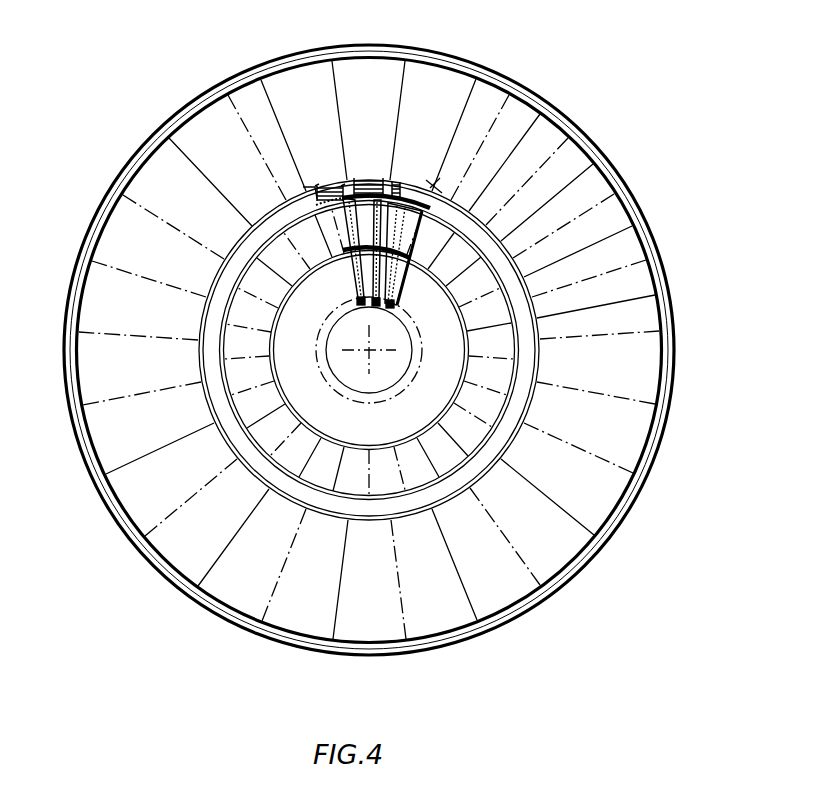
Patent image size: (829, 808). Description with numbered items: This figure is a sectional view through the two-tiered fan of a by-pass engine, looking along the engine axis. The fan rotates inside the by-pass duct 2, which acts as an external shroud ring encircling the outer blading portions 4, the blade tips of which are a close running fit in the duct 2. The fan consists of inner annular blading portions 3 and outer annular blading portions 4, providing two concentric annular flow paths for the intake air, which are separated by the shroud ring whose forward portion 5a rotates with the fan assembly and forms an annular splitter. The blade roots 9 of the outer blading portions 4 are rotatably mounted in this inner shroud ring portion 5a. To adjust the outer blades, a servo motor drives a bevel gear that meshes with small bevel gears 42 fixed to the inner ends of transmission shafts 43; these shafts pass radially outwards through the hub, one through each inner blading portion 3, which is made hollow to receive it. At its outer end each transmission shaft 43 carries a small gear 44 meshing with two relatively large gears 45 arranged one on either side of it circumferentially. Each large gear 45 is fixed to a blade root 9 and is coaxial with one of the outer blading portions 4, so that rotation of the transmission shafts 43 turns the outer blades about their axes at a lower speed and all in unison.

The by-pass duct 2 is at (338, 52).
The inner annular blading portion 3 is at (423, 238).
The outer annular blading portion 4 is at (290, 68).
The forward portion of shroud ring 5a is at (517, 270).
The blade root 9 is at (331, 185).
The small bevel gear 42 is at (357, 302).
The transmission shaft 43 is at (362, 283).
The small gear 44 is at (356, 180).
The large gear 45 is at (313, 198).